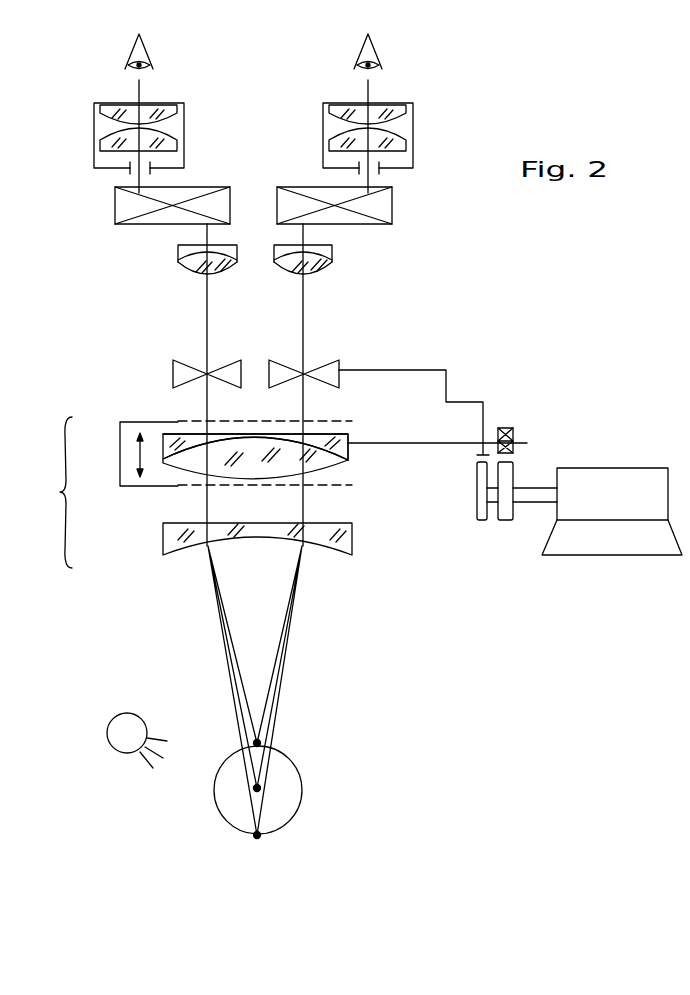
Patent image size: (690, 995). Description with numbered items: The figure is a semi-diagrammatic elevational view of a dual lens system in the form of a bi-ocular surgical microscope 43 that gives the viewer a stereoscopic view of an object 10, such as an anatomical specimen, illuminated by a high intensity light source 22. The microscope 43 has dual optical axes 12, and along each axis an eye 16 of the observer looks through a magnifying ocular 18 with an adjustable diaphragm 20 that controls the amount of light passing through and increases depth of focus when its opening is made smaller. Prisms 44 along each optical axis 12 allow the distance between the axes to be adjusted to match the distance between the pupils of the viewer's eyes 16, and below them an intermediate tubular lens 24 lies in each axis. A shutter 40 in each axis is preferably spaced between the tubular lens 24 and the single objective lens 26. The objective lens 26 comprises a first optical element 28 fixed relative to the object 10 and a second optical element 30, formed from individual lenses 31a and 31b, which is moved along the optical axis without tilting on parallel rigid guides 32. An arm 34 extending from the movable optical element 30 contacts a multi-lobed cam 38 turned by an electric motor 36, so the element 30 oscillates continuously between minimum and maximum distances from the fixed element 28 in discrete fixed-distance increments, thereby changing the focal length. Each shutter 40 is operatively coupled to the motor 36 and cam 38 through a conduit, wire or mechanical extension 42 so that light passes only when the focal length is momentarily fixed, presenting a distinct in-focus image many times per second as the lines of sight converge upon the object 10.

The object 10 is at (290, 756).
The longitudinal optical axis 12 is at (137, 97).
The eye 16 is at (129, 52).
The ocular 18 is at (94, 130).
The adjustable diaphragm 20 is at (107, 168).
The light source 22 is at (114, 718).
The tubular lens 24 is at (178, 265).
The objective lens 26 is at (52, 492).
The first optical element 28 is at (343, 536).
The second optical element 30 is at (355, 423).
The lens 31a is at (352, 450).
The lens 31b is at (340, 463).
The guides 32 is at (216, 453).
The arm 34 is at (503, 428).
The electric motor 36 is at (596, 487).
The multi-lobed cam 38 is at (507, 513).
The shutter 40 is at (339, 362).
The conduit, wire or mechanical extension 42 is at (447, 378).
The bi-ocular surgical microscope 43 is at (92, 352).
The prisms 44 is at (115, 218).